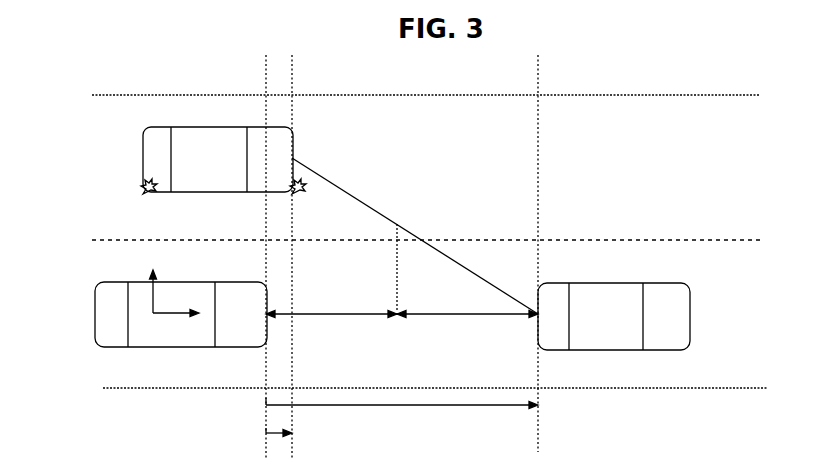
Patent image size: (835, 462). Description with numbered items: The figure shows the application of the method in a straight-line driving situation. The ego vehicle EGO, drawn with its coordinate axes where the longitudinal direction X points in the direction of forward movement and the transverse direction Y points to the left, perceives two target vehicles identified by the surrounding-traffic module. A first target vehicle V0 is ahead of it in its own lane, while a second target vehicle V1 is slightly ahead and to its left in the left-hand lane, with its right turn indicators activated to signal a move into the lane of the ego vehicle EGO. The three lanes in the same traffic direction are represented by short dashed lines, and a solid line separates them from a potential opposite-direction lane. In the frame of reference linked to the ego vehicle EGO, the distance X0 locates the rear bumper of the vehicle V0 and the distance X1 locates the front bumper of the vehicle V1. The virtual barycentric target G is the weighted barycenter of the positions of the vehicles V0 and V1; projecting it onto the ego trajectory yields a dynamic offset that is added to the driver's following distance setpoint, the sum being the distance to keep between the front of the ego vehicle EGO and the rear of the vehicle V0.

The second target vehicle V1 is at (223, 160).
The first target vehicle V0 is at (614, 316).
The ego vehicle EGO is at (95, 328).
The virtual barycentric target G is at (415, 236).
The longitudinal direction X is at (176, 325).
The transverse direction Y is at (159, 291).
The distance of the first target vehicle X0 is at (419, 405).
The distance of the second target vehicle X1 is at (298, 437).